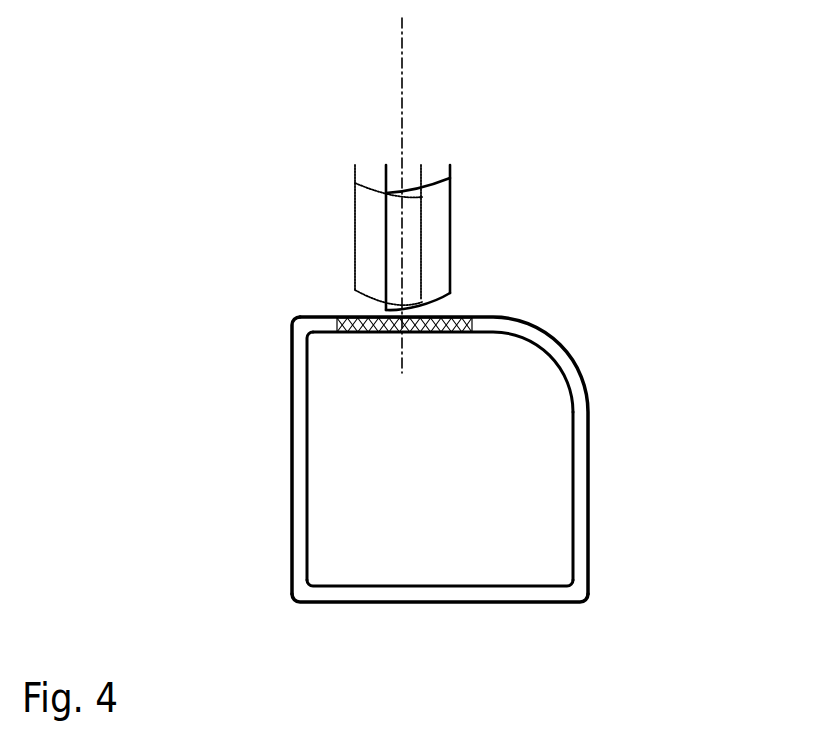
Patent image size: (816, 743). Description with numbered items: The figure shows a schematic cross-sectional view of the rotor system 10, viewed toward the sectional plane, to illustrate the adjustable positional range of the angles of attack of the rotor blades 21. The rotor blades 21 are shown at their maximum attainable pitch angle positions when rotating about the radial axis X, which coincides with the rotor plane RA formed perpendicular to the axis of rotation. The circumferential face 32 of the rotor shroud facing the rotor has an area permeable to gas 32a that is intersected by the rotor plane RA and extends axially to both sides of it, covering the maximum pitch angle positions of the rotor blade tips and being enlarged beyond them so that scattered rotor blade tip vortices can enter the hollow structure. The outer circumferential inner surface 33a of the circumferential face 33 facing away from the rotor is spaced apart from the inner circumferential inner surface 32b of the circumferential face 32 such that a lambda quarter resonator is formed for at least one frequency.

The rotor system 10 is at (679, 115).
The rotor plane RA is at (402, 75).
The rotor blades 21 is at (386, 232).
The circumferential face facing the rotor 32 is at (477, 317).
The area permeable to gas 32a is at (336, 323).
The inner circumferential inner surface 32b is at (480, 335).
The circumferential face facing away from the rotor 33 is at (392, 590).
The outer circumferential inner surface 33a is at (437, 583).